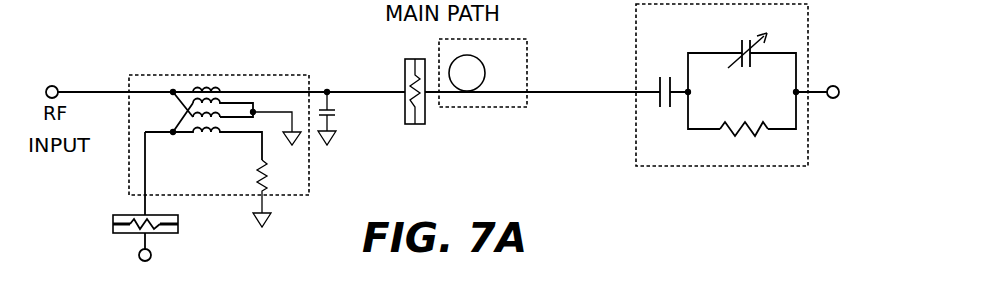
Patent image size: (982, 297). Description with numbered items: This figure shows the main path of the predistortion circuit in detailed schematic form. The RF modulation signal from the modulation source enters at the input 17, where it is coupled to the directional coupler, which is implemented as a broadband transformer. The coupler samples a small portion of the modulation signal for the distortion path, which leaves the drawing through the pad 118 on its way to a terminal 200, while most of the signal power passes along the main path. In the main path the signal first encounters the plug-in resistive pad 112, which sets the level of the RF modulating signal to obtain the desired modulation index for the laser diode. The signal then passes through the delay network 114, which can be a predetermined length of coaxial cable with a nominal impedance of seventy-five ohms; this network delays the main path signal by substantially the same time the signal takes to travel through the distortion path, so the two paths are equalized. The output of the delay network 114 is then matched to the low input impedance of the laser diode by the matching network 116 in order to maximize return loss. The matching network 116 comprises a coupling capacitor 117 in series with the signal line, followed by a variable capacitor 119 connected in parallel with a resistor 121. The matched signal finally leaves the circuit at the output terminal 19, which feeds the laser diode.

The input terminal 17 is at (56, 86).
The output terminal 19 is at (833, 86).
The plug-in resistive pad 112 is at (410, 124).
The delay network 114 is at (495, 107).
The matching network 116 is at (728, 166).
The coupling capacitor 117 is at (658, 80).
The pad 118 is at (112, 220).
The variable capacitor 119 is at (266, 75).
The resistor 121 is at (723, 132).
The terminal 200 is at (139, 256).